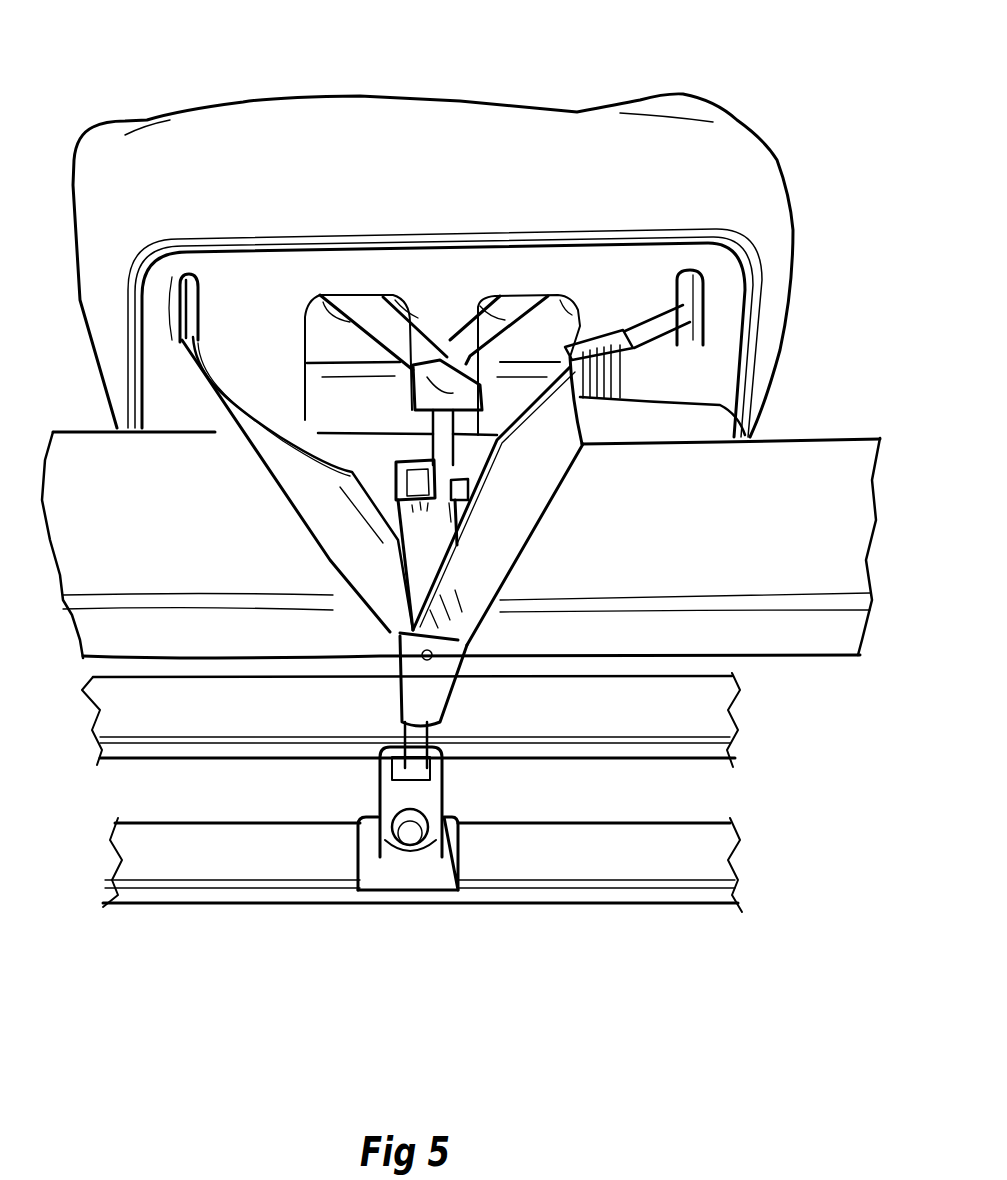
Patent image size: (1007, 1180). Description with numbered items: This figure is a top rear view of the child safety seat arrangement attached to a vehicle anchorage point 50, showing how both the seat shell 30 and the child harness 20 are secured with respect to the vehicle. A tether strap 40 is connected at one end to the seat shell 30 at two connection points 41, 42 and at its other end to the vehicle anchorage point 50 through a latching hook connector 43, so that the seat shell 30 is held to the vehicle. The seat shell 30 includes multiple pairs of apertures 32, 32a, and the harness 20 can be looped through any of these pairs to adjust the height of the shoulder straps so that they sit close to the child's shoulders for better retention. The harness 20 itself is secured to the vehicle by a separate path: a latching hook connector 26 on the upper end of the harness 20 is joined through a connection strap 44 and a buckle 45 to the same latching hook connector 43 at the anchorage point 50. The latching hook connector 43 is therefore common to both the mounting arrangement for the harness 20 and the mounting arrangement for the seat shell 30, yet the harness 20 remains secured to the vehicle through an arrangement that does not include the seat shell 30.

The seat shell 30 is at (275, 140).
The child harness 20 is at (518, 300).
The connection point 41 is at (177, 310).
The connection point 42 is at (720, 317).
The apertures 32a is at (318, 372).
The apertures 32 is at (325, 310).
The latching hook connector 26 is at (445, 403).
The buckle 45 is at (396, 468).
The connection strap 44 is at (422, 557).
The tether strap 40 is at (328, 522).
The latching hook connector 43 is at (413, 690).
The vehicle anchorage point 50 is at (432, 838).